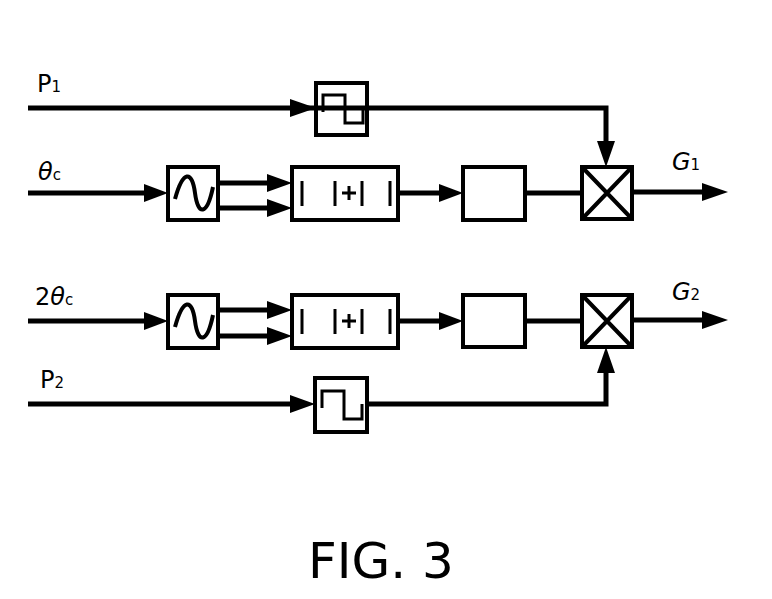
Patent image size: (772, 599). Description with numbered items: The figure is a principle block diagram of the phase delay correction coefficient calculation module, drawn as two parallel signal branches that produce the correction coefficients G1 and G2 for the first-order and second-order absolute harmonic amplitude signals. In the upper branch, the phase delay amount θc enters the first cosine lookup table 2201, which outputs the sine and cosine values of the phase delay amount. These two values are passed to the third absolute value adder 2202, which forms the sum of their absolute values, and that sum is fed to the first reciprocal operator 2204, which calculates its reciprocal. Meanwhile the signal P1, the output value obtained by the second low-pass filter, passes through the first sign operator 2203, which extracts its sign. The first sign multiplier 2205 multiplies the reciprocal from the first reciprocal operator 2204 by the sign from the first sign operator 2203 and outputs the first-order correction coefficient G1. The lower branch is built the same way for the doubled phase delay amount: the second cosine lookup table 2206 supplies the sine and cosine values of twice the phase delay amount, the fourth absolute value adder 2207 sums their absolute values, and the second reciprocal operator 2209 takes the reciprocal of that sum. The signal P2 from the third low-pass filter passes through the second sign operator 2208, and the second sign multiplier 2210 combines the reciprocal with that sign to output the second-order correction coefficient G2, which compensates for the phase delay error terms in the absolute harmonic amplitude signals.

The first cosine lookup table 2201 is at (172, 167).
The third absolute value adder 2202 is at (320, 167).
The first sign operator 2203 is at (317, 83).
The first reciprocal operator 2204 is at (473, 167).
The first sign multiplier 2205 is at (585, 167).
The second cosine lookup table 2206 is at (168, 350).
The fourth absolute value adder 2207 is at (313, 348).
The second sign operator 2208 is at (315, 432).
The second reciprocal operator 2209 is at (472, 348).
The second sign multiplier 2210 is at (587, 347).